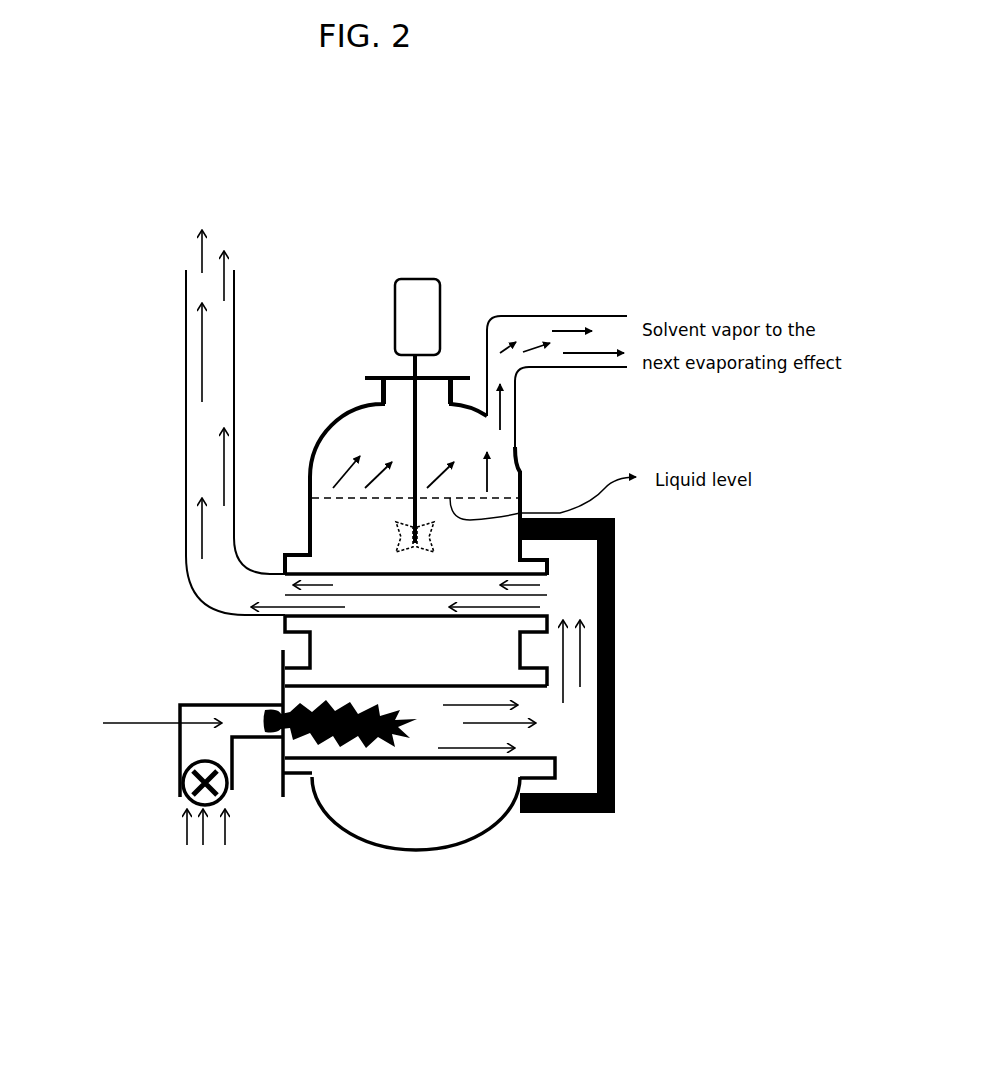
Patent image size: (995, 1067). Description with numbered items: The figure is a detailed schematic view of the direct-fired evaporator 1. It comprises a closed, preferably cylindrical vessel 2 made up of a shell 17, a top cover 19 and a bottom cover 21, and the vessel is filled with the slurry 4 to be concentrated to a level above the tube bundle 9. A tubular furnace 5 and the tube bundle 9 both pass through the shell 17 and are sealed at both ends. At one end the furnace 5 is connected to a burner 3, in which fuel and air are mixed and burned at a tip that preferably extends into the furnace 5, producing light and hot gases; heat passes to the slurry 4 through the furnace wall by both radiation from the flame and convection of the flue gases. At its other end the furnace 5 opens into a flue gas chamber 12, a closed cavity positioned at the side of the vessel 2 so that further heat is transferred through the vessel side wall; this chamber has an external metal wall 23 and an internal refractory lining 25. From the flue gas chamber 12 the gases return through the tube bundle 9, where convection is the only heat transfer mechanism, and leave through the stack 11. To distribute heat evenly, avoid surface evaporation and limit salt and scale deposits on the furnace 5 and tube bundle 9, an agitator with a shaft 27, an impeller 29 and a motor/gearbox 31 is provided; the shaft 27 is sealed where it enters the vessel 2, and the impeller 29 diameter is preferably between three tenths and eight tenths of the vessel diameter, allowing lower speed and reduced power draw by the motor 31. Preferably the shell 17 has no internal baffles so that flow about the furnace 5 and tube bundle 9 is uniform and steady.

The direct-fired evaporator 1 is at (385, 272).
The motor/gearbox 31 is at (440, 292).
The agitator shaft 27 is at (418, 428).
The impeller 29 is at (398, 532).
The top cover 19 is at (337, 420).
The vessel 2 is at (523, 460).
The shell 17 is at (523, 488).
The slurry 4 is at (327, 523).
The external metal wall 23 is at (613, 577).
The internal refractory lining 25 is at (543, 540).
The stack 11 is at (185, 517).
The tube bundle 9 is at (365, 618).
The flue gas chamber 12 is at (578, 673).
The tubular furnace 5 is at (385, 758).
The bottom cover 21 is at (472, 848).
The burner 3 is at (153, 755).